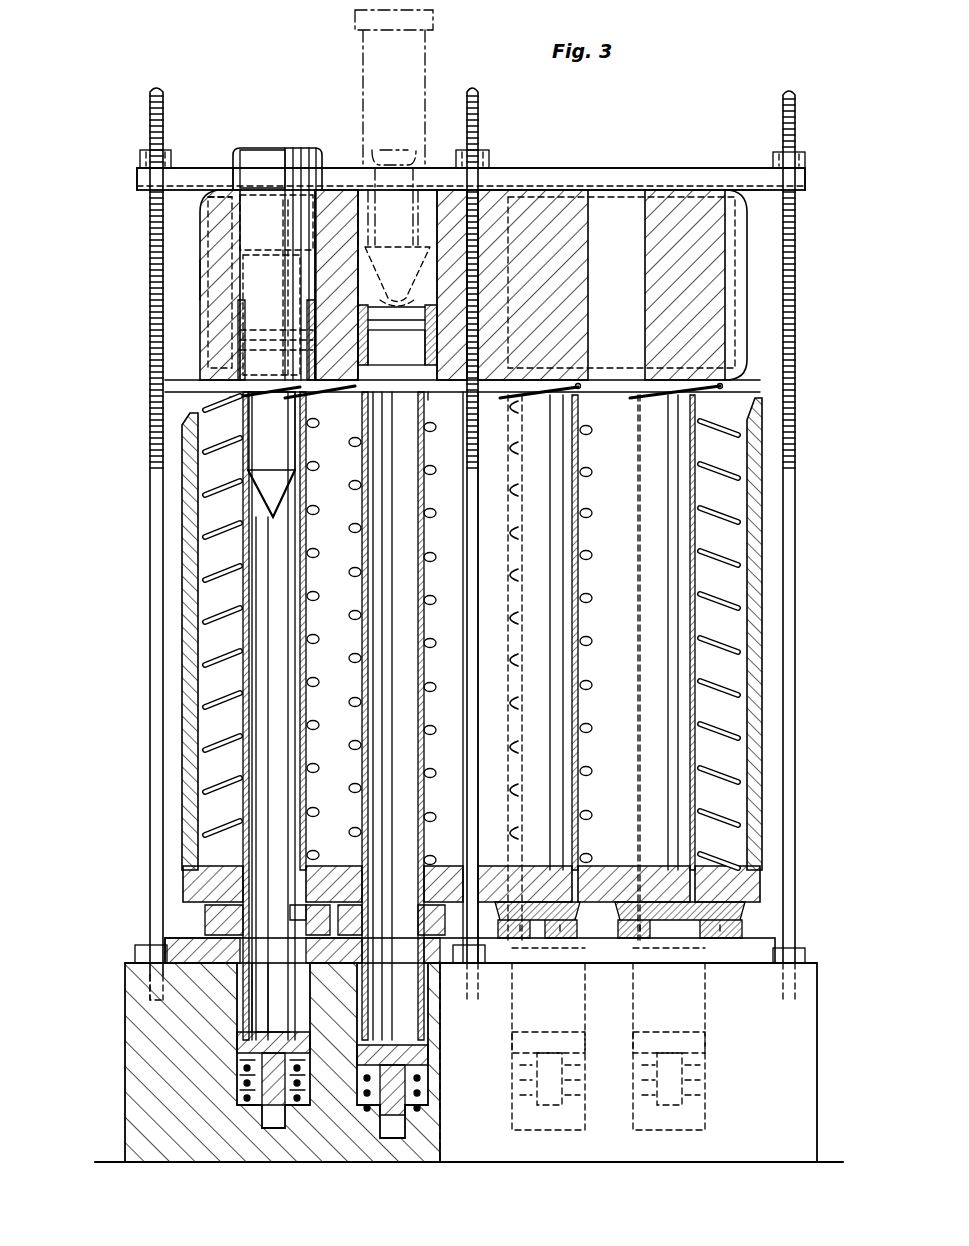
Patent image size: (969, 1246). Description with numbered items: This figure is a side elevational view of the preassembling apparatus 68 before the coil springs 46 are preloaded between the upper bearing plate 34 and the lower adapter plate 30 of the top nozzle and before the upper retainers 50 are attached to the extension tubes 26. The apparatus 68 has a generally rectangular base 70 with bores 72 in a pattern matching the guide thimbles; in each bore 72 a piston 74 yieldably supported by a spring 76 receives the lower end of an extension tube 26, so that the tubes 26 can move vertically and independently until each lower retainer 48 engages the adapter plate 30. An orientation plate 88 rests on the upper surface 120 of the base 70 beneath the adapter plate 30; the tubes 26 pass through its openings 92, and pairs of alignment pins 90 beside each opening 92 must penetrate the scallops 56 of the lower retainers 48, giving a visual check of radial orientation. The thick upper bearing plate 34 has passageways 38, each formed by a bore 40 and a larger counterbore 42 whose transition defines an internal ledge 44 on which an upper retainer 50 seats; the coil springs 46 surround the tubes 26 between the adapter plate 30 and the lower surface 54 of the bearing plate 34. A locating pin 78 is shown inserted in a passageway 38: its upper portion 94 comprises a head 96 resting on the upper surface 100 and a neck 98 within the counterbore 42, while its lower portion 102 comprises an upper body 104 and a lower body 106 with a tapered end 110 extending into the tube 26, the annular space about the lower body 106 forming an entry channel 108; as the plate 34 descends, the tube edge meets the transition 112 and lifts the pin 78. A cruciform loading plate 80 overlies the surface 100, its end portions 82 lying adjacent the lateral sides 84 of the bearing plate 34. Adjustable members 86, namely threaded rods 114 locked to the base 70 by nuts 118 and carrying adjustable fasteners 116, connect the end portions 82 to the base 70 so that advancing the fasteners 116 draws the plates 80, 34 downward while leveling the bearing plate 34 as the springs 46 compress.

The extension tube 26 is at (205, 549).
The lower adapter plate 30 is at (183, 880).
The upper bearing plate 34 is at (215, 282).
The passageway 38 is at (429, 207).
The bore 40 is at (247, 425).
The counterbore 42 is at (345, 195).
The internal ledge 44 is at (326, 396).
The coil spring 46 is at (222, 482).
The lower retainer 48 is at (200, 917).
The upper retainer 50 is at (207, 326).
The lower surface of the upper bearing plate 54 is at (606, 392).
The scallop 56 is at (560, 905).
The preassembling apparatus 68 is at (681, 97).
The base 70 is at (130, 1005).
The bore 72 is at (437, 1092).
The piston 74 is at (294, 1026).
The spring 76 is at (440, 1115).
The locating pin 78 is at (354, 50).
The cruciform loading plate 80 is at (590, 168).
The end portion 82 is at (137, 180).
The lateral side 84 is at (210, 248).
The adjustable member 86 is at (150, 86).
The orientation plate 88 is at (749, 972).
The alignment pin 90 is at (165, 928).
The opening 92 is at (256, 976).
The upper portion 94 is at (230, 160).
The head 96 is at (259, 148).
The neck 98 is at (240, 210).
The upper surface of the upper bearing plate 100 is at (517, 185).
The lower portion 102 is at (240, 376).
The upper body 104 is at (425, 66).
The lower body 106 is at (398, 302).
The entry channel 108 is at (372, 190).
The tapered end 110 is at (386, 306).
The transition 112 is at (390, 156).
The rod 114 is at (148, 696).
The adjustable fastener 116 is at (143, 150).
The nut 118 is at (135, 956).
The upper surface of the base 120 is at (752, 960).